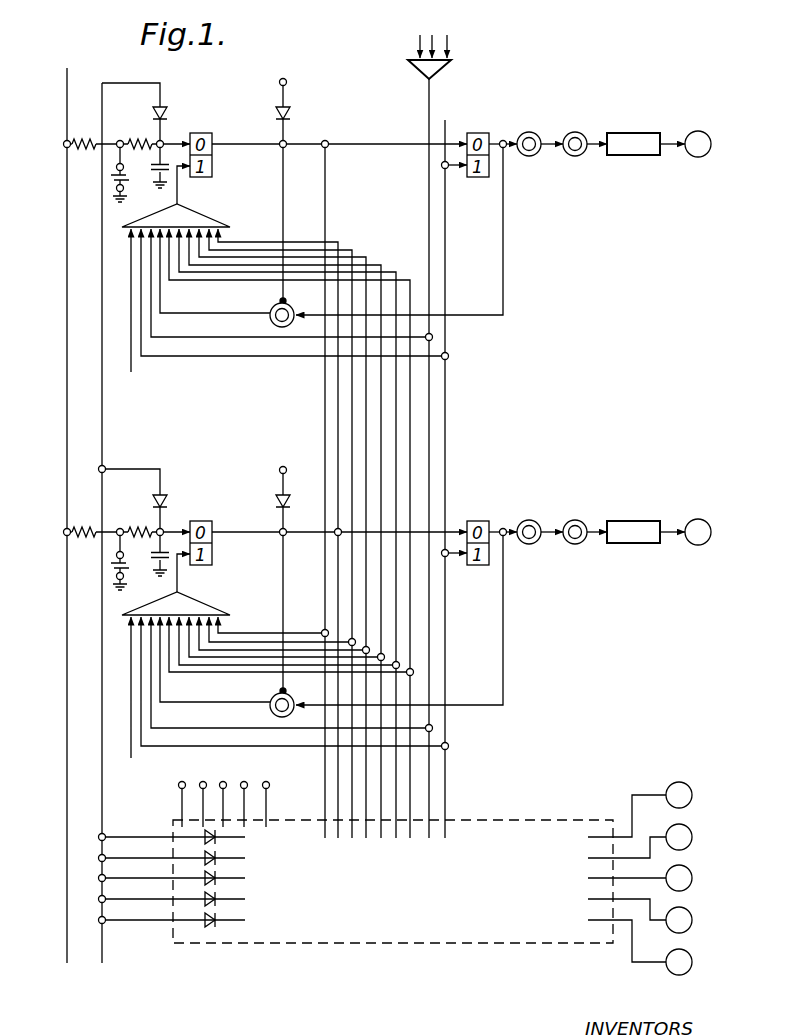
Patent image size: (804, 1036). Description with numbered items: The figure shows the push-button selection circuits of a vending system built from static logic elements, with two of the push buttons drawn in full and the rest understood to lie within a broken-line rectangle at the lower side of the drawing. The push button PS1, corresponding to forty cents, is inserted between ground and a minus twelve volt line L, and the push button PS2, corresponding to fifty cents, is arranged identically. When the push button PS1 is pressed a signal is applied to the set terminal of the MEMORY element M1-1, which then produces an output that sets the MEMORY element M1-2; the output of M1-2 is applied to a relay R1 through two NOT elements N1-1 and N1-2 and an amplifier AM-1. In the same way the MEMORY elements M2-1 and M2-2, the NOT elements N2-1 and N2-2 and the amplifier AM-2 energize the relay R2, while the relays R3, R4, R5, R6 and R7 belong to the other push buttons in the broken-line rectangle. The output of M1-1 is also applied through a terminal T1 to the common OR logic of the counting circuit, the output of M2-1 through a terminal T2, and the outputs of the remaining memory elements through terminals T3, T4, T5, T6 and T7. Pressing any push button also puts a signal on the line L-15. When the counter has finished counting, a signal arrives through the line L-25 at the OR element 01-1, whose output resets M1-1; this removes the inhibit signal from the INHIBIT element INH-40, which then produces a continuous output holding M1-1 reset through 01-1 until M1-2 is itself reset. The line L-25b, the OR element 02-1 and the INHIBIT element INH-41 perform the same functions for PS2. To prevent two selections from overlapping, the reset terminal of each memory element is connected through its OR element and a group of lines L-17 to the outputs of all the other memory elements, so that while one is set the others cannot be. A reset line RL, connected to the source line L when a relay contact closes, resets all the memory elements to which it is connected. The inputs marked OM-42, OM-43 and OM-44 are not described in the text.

The line L is at (76, 515).
The line L-15 is at (102, 950).
The group of lines L-17 is at (417, 278).
The line L-25 is at (131, 372).
The line L-25b is at (131, 758).
The input from OM-42 is at (448, 38).
The input from OM-43 is at (432, 37).
The input from OM-44 is at (419, 42).
The reset line RL is at (447, 130).
The push button PS1 is at (113, 160).
The push button PS2 is at (113, 548).
The terminal T1 is at (287, 83).
The terminal T2 is at (296, 452).
The terminal T3 is at (179, 787).
The terminal T4 is at (214, 775).
The terminal T5 is at (226, 782).
The terminal T6 is at (248, 783).
The terminal T7 is at (270, 786).
The MEMORY element M1-1 is at (212, 162).
The MEMORY element M1-2 is at (483, 180).
The MEMORY element M2-1 is at (212, 560).
The MEMORY element M2-2 is at (484, 521).
The OR element 01-1 is at (198, 217).
The OR element 02-1 is at (196, 612).
The INHIBIT element INH-40 is at (346, 235).
The INHIBIT element INH-41 is at (272, 712).
The NOT element N1-1 is at (531, 131).
The NOT element N1-2 is at (592, 117).
The NOT element N2-1 is at (530, 520).
The NOT element N2-2 is at (578, 520).
The amplifier AM-1 is at (630, 128).
The amplifier AM-2 is at (630, 516).
The relay R1 is at (701, 131).
The relay R2 is at (701, 519).
The relay R3 is at (677, 782).
The relay R4 is at (672, 825).
The relay R5 is at (676, 891).
The relay R6 is at (674, 933).
The relay R7 is at (673, 975).